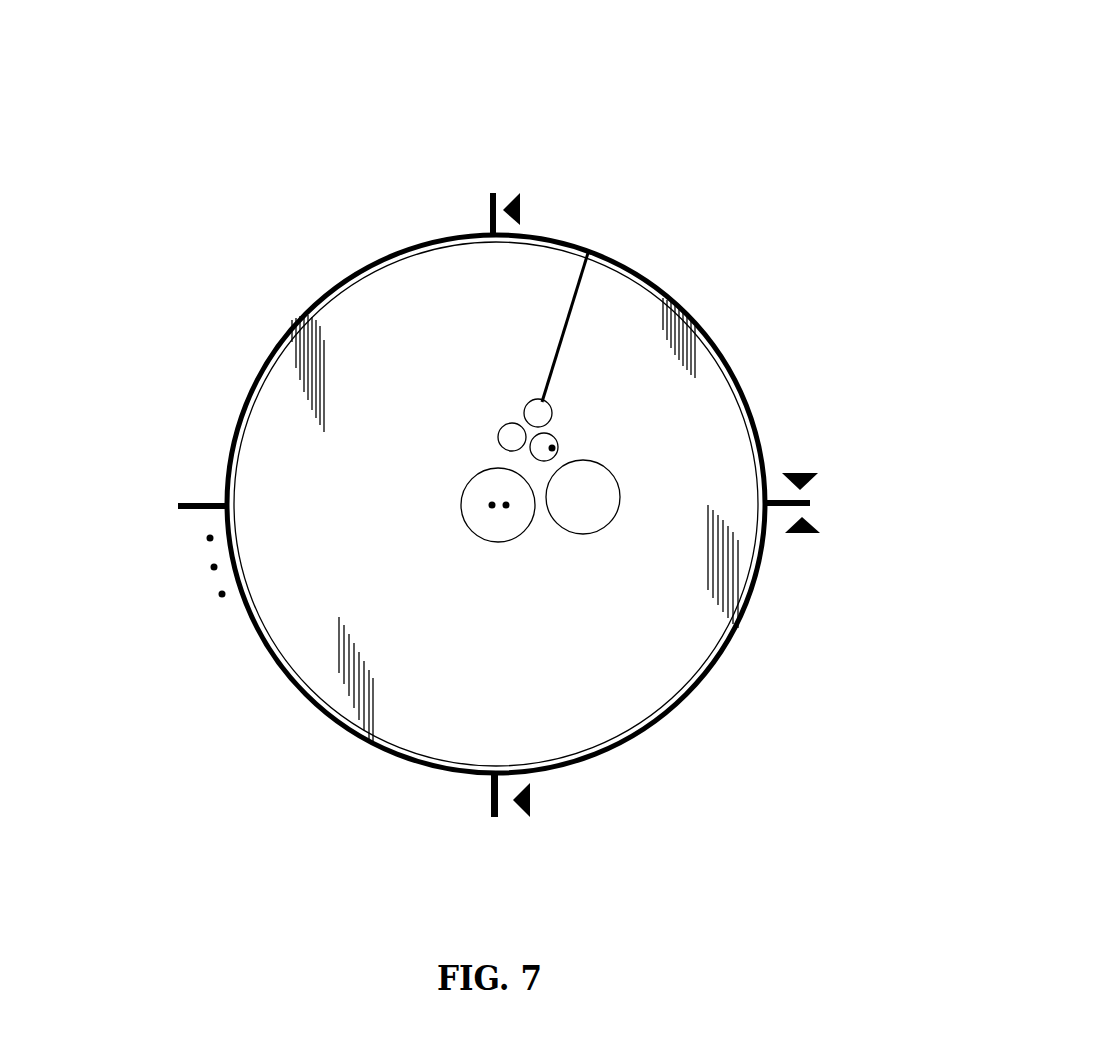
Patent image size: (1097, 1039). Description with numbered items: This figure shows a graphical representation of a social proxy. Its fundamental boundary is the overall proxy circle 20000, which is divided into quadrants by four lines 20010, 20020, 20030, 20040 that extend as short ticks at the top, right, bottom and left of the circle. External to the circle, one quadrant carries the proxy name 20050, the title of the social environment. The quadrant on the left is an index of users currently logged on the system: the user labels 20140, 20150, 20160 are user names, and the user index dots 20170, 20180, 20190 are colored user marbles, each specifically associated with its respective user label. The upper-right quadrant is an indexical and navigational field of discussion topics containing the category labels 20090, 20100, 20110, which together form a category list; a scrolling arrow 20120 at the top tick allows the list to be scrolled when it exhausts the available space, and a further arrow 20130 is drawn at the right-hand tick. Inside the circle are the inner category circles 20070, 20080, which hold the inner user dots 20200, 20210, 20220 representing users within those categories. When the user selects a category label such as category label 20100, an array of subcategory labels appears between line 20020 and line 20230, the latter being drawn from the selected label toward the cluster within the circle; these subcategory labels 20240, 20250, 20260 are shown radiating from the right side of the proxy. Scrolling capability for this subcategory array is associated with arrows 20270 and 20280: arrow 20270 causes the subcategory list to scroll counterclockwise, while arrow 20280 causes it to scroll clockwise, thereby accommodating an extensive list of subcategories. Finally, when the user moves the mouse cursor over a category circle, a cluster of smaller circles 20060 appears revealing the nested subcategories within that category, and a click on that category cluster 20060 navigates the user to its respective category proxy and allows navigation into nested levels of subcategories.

The overall proxy circle 20000 is at (353, 270).
The quadrant dividing line 20010 is at (488, 200).
The quadrant dividing line 20020 is at (806, 497).
The quadrant dividing line 20030 is at (490, 807).
The quadrant dividing line 20040 is at (183, 502).
The proxy name 20050 is at (255, 325).
The cluster of smaller circles 20060 is at (512, 423).
The inner category circle 20070 is at (473, 478).
The inner category circle 20080 is at (620, 483).
The category label 20090 is at (573, 100).
The category label 20100 is at (628, 118).
The category label 20110 is at (696, 122).
The scrolling arrow 20120 is at (515, 222).
The right downward arrow indicator 20130 is at (800, 473).
The user label 20140 is at (108, 543).
The user label 20150 is at (117, 588).
The user label 20160 is at (120, 636).
The user index dot 20170 is at (213, 538).
The user index dot 20180 is at (217, 567).
The user index dot 20190 is at (225, 594).
The inner user dot 20200 is at (492, 508).
The inner user dot 20210 is at (506, 508).
The inner user dot 20220 is at (556, 448).
The line 20230 is at (568, 322).
The subcategory 2a label 20240 is at (934, 570).
The subcategory 2b label 20250 is at (920, 645).
The subcategory 2c label 20260 is at (893, 700).
The scrolling arrow 20270 is at (812, 523).
The scrolling arrow 20280 is at (530, 800).